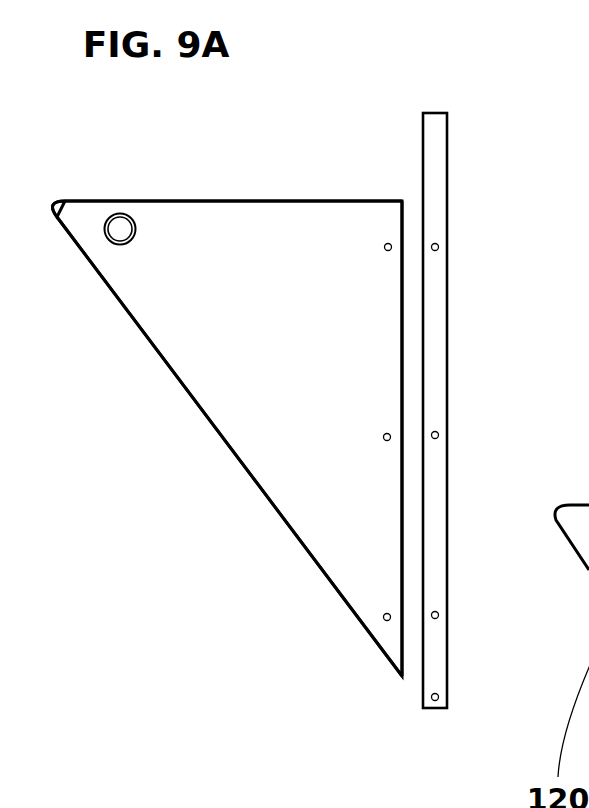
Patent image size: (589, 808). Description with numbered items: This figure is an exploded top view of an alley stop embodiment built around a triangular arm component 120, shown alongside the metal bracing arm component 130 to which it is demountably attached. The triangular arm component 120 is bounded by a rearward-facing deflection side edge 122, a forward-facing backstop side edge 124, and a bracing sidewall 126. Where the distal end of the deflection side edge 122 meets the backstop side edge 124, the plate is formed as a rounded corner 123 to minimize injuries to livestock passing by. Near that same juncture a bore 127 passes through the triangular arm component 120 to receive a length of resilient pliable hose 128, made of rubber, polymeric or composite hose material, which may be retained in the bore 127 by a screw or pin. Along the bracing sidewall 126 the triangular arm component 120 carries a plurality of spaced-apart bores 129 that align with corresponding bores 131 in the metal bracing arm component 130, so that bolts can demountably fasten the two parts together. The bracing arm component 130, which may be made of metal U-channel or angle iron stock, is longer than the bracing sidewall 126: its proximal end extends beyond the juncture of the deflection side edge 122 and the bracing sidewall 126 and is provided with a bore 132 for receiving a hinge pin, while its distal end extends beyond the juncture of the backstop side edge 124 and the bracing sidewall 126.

The triangular arm component 120 is at (240, 296).
The rearward-facing deflection side edge 122 is at (240, 462).
The rounded corner 123 is at (62, 203).
The forward-facing backstop side edge 124 is at (190, 200).
The bracing sidewall 126 is at (403, 607).
The bore 127 is at (110, 213).
The resilient pliable hose 128 is at (106, 231).
The bores 129 is at (385, 614).
The metal bracing arm component 130 is at (447, 198).
The bores 131 is at (440, 614).
The bore 132 is at (440, 694).